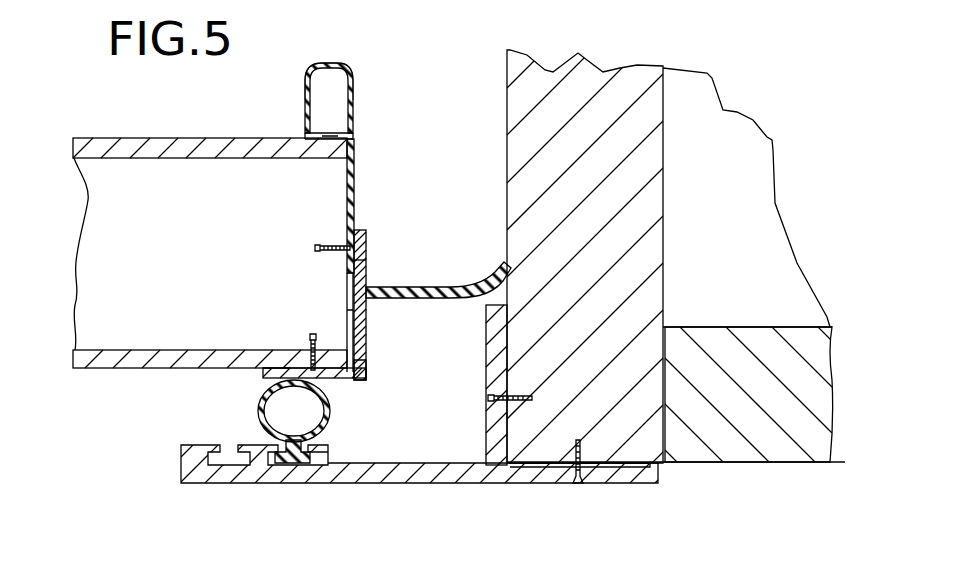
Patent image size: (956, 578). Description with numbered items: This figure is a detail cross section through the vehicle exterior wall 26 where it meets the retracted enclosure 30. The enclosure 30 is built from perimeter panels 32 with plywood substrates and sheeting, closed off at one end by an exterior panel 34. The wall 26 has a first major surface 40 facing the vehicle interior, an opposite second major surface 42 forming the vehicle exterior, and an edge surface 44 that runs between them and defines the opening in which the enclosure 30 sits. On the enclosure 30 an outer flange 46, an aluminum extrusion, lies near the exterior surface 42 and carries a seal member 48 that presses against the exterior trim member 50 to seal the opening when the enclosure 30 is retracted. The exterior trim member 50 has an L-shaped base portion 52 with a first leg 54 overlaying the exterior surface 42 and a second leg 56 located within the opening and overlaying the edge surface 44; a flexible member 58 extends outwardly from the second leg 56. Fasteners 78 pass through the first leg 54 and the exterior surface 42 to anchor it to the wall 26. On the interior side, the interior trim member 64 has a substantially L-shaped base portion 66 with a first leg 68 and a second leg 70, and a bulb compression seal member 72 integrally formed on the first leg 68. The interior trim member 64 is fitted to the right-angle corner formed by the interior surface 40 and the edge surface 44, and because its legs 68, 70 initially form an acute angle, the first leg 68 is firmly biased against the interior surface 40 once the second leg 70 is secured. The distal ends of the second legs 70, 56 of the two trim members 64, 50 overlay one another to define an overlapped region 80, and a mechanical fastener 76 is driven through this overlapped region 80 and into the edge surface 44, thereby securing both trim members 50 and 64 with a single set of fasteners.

The exterior wall 26 is at (78, 388).
The enclosure 30 is at (645, 489).
The perimeter panels 32 is at (645, 121).
The exterior panel 34 is at (762, 464).
The first major surface 40 is at (170, 138).
The second major surface 42 is at (138, 369).
The edge surface 44 is at (360, 318).
The outer flange 46 is at (420, 484).
The seal member 48 is at (330, 420).
The trim member 50 is at (336, 381).
The base portion 52 is at (368, 362).
The first leg 54 is at (280, 368).
The second leg 56 is at (367, 268).
The flexible member 58 is at (425, 299).
The trim member 64 is at (358, 76).
The base portion 66 is at (357, 176).
The first leg 68 is at (349, 128).
The second leg 70 is at (357, 198).
The seal member 72 is at (312, 63).
The mechanical fastener 76 is at (318, 246).
The fasteners 78 is at (313, 336).
The overlapped region 80 is at (368, 250).